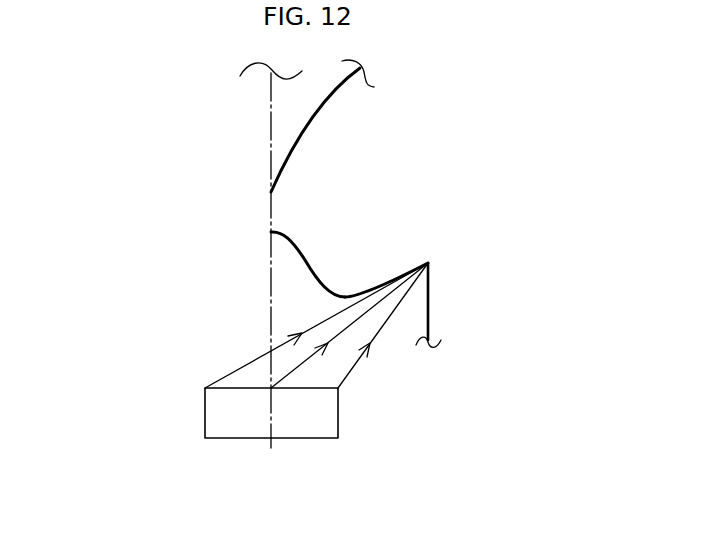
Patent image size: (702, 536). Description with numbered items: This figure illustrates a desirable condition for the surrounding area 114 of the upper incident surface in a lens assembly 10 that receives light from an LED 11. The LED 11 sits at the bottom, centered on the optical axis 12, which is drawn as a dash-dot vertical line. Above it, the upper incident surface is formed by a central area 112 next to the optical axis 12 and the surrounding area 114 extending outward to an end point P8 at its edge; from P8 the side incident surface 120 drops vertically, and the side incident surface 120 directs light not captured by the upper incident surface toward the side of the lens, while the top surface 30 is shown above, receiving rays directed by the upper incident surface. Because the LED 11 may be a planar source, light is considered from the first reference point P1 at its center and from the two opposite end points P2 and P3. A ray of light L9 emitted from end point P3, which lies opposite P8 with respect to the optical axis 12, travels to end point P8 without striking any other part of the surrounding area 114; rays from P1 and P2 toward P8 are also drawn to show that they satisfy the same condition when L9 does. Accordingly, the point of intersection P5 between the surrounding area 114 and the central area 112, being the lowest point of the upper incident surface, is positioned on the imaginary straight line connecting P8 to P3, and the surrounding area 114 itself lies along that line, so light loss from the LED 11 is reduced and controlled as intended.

The lighting device 10 is at (142, 104).
The LED 11 is at (252, 432).
The optical axis 12 is at (271, 147).
The top surface 30 is at (323, 112).
The central area 112 is at (300, 256).
The surrounding area 114 is at (382, 287).
The side incident surface 120 is at (428, 315).
The ray of light L9 is at (316, 325).
The first reference point P1 is at (271, 388).
The end point P2 is at (338, 388).
The end point P3 is at (205, 388).
The point of intersection P5 is at (343, 298).
The end point P8 is at (430, 264).